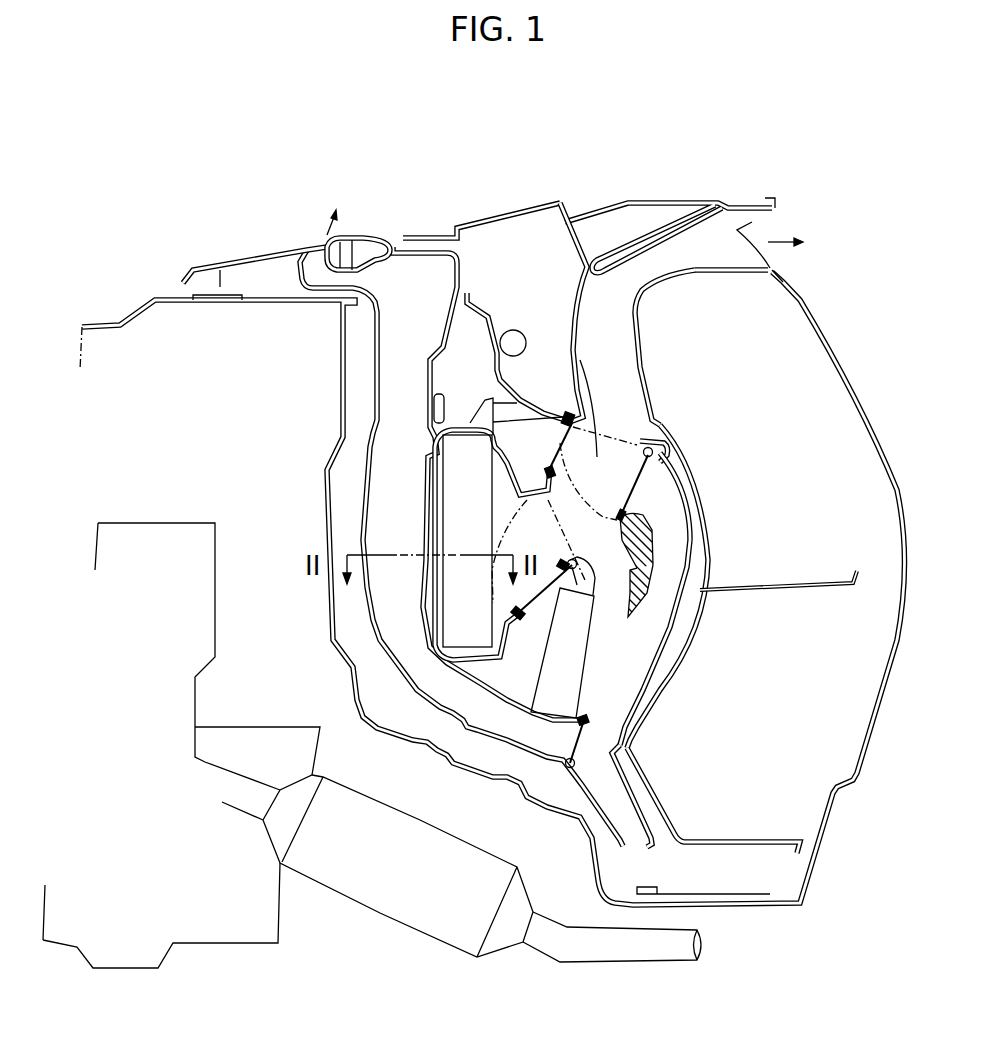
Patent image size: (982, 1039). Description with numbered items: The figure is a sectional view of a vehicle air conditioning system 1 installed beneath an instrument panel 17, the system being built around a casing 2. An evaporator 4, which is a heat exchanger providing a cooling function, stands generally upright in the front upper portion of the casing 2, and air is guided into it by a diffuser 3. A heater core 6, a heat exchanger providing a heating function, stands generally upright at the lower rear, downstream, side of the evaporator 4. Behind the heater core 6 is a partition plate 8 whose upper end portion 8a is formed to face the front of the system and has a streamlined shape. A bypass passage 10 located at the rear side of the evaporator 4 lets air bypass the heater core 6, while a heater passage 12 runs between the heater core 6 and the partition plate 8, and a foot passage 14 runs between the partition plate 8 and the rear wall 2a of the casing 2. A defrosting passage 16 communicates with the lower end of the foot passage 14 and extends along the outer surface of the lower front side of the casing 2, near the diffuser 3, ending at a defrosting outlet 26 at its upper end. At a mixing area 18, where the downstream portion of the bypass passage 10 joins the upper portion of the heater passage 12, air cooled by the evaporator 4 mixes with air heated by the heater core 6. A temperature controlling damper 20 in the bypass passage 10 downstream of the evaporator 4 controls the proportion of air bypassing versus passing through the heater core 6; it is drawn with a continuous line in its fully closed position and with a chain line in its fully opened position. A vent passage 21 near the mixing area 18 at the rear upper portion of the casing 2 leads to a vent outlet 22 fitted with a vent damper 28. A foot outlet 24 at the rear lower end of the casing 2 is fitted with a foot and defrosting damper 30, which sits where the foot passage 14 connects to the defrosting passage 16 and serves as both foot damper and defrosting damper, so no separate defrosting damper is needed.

The air conditioning system 1 is at (508, 300).
The casing 2 is at (690, 533).
The rear wall 2a is at (693, 567).
The diffuser 3 is at (433, 475).
The evaporator 4 is at (457, 493).
The heater core 6 is at (585, 640).
The partition plate 8 is at (643, 602).
The upper end portion 8a is at (640, 517).
The bypass passage 10 is at (540, 513).
The heater passage 12 is at (610, 620).
The foot passage 14 is at (663, 520).
The defrosting passage 16 is at (383, 598).
The instrument panel 17 is at (520, 207).
The mixing area 18 is at (575, 348).
The temperature controlling damper 20 is at (567, 566).
The vent passage 21 is at (617, 337).
The vent outlet 22 is at (737, 258).
The foot outlet 24 is at (623, 817).
The defrosting outlet 26 is at (318, 262).
The vent damper 28 is at (662, 458).
The foot and defrosting damper 30 is at (587, 727).